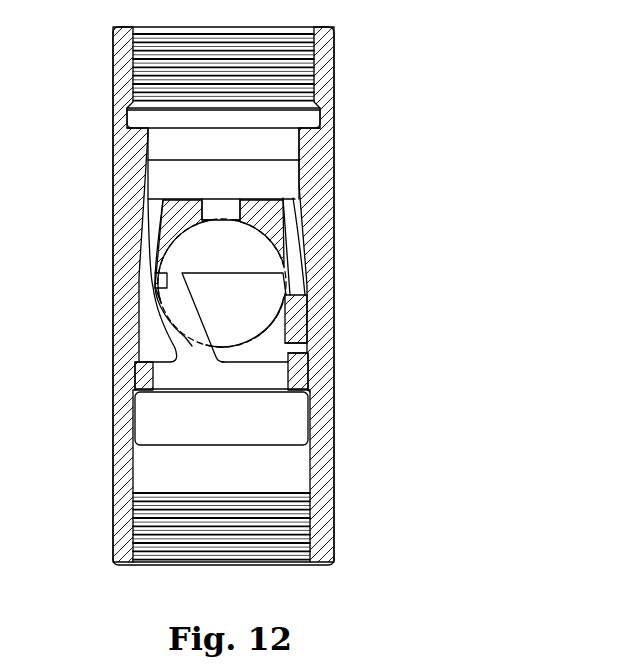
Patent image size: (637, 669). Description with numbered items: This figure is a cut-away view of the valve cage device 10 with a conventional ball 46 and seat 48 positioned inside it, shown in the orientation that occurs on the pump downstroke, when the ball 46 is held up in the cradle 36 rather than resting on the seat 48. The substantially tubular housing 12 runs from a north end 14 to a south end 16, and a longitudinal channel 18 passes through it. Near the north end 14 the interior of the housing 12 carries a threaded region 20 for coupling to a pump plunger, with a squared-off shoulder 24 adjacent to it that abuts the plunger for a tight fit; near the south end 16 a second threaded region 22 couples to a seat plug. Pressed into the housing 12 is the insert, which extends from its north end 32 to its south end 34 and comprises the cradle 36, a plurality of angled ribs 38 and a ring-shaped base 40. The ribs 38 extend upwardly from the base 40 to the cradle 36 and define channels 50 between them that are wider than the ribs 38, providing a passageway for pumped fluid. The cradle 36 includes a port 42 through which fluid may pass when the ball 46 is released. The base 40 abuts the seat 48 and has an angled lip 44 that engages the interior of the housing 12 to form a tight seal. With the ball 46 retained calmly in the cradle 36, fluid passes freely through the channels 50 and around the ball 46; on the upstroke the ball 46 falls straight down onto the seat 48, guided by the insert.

The valve cage device 10 is at (468, 156).
The housing 12 is at (338, 148).
The north end 14 is at (110, 37).
The south end 16 is at (118, 562).
The longitudinal channel 18 is at (305, 573).
The threaded region 20 is at (305, 50).
The threaded region 22 is at (240, 494).
The shoulder 24 is at (322, 121).
The north end of insert 32 is at (300, 199).
The south end of insert 34 is at (312, 395).
The cradle 36 is at (305, 265).
The ribs 38 is at (178, 287).
The base 40 is at (284, 372).
The port 42 is at (223, 210).
The lip 44 is at (140, 370).
The ball 46 is at (262, 307).
The seat 48 is at (147, 423).
The channels 50 is at (150, 323).